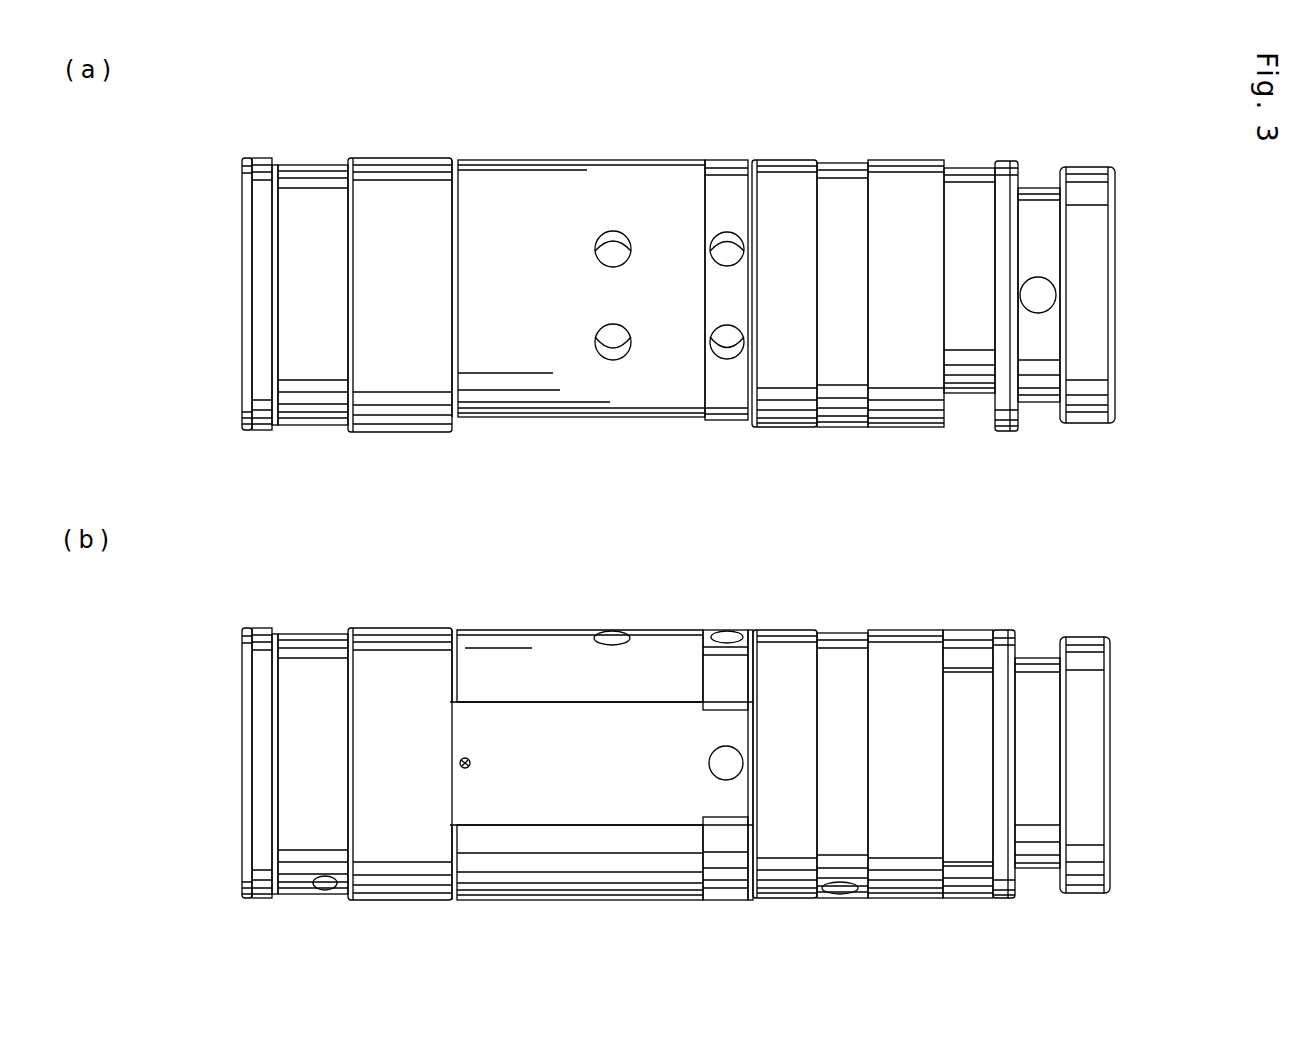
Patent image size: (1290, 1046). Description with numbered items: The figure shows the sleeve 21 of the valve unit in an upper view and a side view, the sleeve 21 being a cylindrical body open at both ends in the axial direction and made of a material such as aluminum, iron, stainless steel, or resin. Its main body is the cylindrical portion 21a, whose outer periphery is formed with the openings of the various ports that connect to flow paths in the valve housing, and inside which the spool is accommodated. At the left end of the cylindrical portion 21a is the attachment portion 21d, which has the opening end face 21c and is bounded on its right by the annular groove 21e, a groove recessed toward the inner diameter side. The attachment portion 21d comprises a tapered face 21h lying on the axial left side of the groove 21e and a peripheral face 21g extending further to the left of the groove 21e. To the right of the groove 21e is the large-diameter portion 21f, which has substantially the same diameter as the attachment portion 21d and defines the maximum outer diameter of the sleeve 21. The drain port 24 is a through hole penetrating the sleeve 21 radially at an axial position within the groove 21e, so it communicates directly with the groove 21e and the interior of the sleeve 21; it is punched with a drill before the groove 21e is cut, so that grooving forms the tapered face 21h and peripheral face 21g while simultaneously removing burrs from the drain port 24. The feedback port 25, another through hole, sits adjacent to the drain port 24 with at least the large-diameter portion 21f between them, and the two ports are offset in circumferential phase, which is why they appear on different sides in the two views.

In FIG. 3A, the sleeve 21 is at (1050, 152).
In FIG. 3B, the sleeve 21 is at (1050, 626).
In FIG. 3A, the cylindrical portion 21a is at (576, 165).
In FIG. 3B, the cylindrical portion 21a is at (575, 640).
In FIG. 3A, the opening end face 21c is at (233, 412).
In FIG. 3B, the opening end face 21c is at (235, 880).
In FIG. 3A, the attachment portion 21d is at (317, 98).
In FIG. 3B, the attachment portion 21d is at (317, 568).
In FIG. 3A, the annular groove 21e is at (307, 425).
In FIG. 3B, the annular groove 21e is at (298, 893).
In FIG. 3A, the large-diameter portion 21f is at (393, 165).
In FIG. 3B, the large-diameter portion 21f is at (393, 635).
In FIG. 3A, the peripheral face 21g is at (263, 157).
In FIG. 3B, the peripheral face 21g is at (263, 627).
In FIG. 3A, the tapered face 21h is at (272, 158).
In FIG. 3B, the tapered face 21h is at (272, 628).
In FIG. 3B, the drain port 24 is at (322, 888).
In FIG. 3B, the feedback port 25 is at (470, 770).